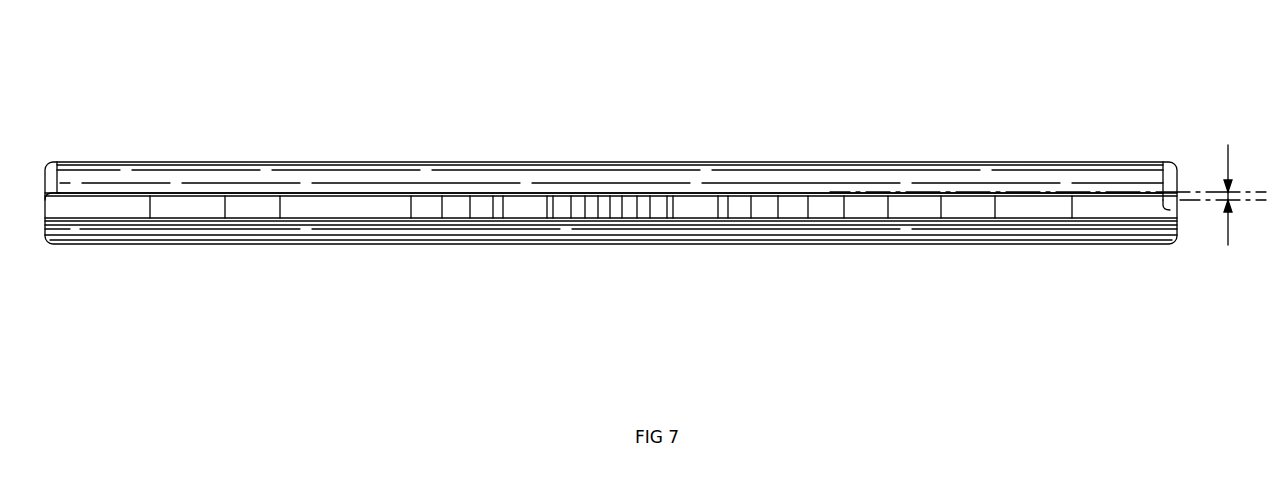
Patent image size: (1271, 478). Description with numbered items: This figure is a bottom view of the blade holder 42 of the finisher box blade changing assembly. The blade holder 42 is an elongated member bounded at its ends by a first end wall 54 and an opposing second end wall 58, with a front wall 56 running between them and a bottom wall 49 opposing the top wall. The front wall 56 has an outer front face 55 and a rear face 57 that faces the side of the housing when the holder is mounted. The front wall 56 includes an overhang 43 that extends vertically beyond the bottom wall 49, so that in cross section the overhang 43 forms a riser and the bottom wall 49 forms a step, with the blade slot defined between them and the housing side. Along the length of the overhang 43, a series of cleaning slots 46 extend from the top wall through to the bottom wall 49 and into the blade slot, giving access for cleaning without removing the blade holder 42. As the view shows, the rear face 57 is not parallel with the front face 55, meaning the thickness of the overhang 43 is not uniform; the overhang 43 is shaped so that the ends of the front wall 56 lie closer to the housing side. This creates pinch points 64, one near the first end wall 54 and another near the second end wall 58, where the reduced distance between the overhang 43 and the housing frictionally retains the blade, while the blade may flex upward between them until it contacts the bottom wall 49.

The blade holder 42 is at (1140, 101).
The overhang 43 is at (252, 183).
The cleaning slots 46 is at (525, 203).
The bottom wall 49 is at (263, 208).
The first end wall 54 is at (43, 223).
The front face 55 is at (991, 162).
The front wall 56 is at (158, 178).
The rear face 57 is at (415, 190).
The second end wall 58 is at (1176, 210).
The pinch points 64 is at (70, 198).